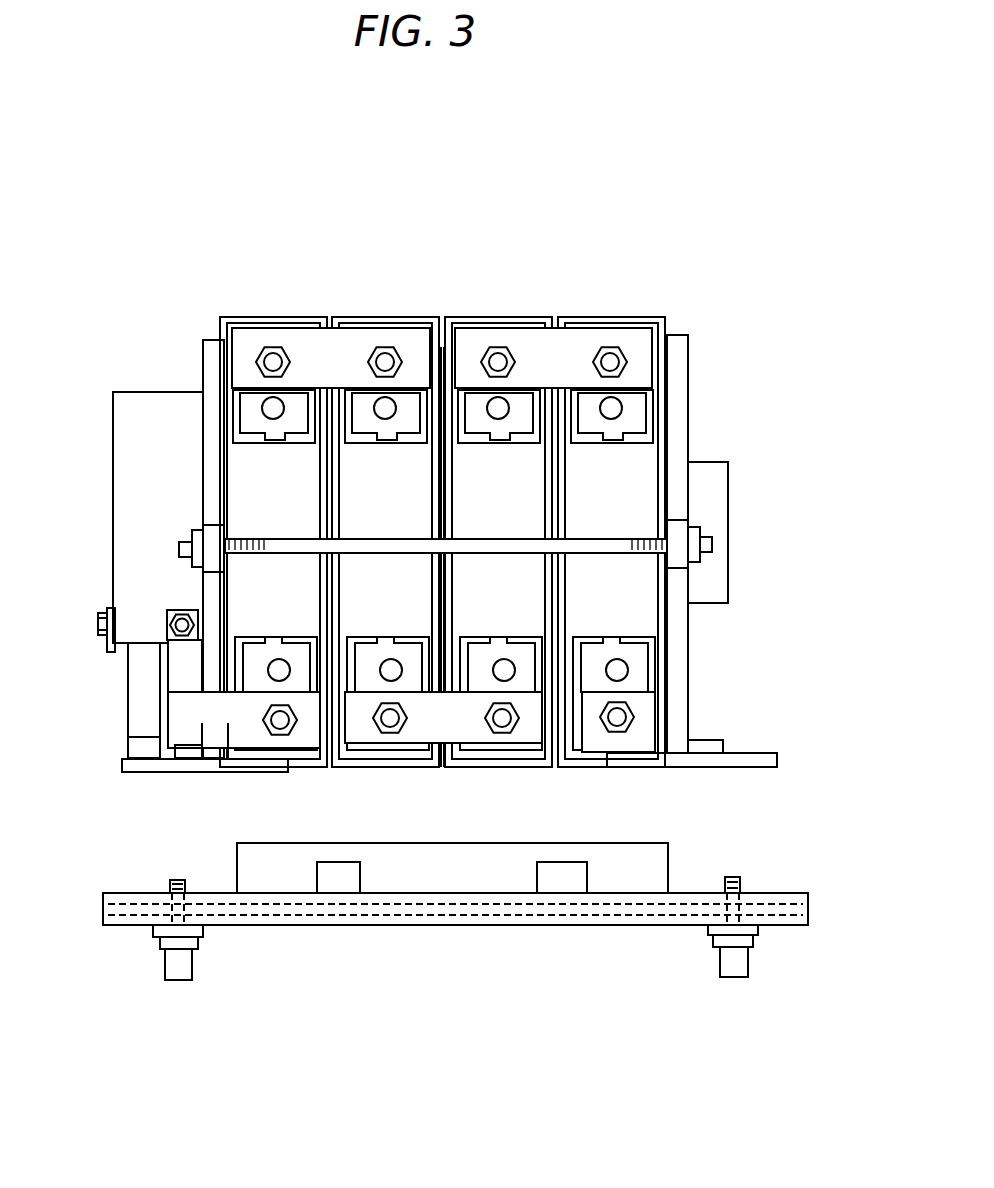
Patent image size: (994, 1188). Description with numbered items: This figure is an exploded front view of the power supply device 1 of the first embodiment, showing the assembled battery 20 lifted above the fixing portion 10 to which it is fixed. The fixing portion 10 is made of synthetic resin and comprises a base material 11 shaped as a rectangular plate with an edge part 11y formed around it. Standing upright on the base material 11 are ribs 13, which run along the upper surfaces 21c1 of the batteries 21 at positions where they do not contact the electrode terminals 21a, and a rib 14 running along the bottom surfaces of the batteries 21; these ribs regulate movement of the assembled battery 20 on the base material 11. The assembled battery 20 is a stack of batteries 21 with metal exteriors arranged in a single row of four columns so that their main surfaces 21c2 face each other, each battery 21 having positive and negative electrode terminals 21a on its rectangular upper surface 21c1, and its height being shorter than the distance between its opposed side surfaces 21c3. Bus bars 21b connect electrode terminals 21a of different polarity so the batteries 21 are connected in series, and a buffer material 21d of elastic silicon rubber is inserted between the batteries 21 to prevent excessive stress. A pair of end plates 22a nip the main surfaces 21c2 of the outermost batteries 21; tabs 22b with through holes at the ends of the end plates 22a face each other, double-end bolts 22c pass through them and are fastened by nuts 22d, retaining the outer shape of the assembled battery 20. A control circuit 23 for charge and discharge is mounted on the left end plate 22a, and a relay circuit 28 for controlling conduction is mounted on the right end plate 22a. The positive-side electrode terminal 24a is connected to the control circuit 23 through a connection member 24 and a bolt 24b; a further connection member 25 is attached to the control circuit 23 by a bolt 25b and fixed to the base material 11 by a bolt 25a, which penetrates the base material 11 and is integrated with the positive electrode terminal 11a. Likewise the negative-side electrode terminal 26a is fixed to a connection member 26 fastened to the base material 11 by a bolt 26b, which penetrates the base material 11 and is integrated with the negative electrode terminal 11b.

The power supply device 1 is at (708, 102).
The fixing portion 10 is at (475, 937).
The base material 11 is at (808, 893).
The positive electrode terminal 11a is at (195, 955).
The negative electrode terminal 11b is at (718, 950).
The edge part 11y is at (382, 892).
The ribs 13 is at (575, 862).
The rib 14 is at (672, 844).
The assembled battery 20 is at (614, 210).
The batteries 21 is at (280, 312).
The electrode terminals 21a is at (503, 330).
The bus bars 21b is at (628, 340).
The upper surface 21c1 is at (620, 487).
The main surfaces 21c2 is at (220, 316).
The side surfaces 21c3 is at (377, 318).
The buffer material 21d is at (442, 322).
The end plates 22a is at (200, 372).
The tabs 22b is at (211, 525).
The double-end bolts 22c is at (585, 549).
The nuts 22d is at (190, 538).
The control circuit 23 is at (130, 392).
The connection member 24 is at (212, 710).
The electrode terminal 24a is at (268, 736).
The bolt 24b is at (167, 612).
The connection member 25 is at (130, 688).
The bolt 25a is at (170, 883).
The bolt 25b is at (102, 622).
The connection member 26 is at (636, 742).
The electrode terminal 26a is at (627, 710).
The bolt 26b is at (733, 877).
The relay circuit 28 is at (730, 492).